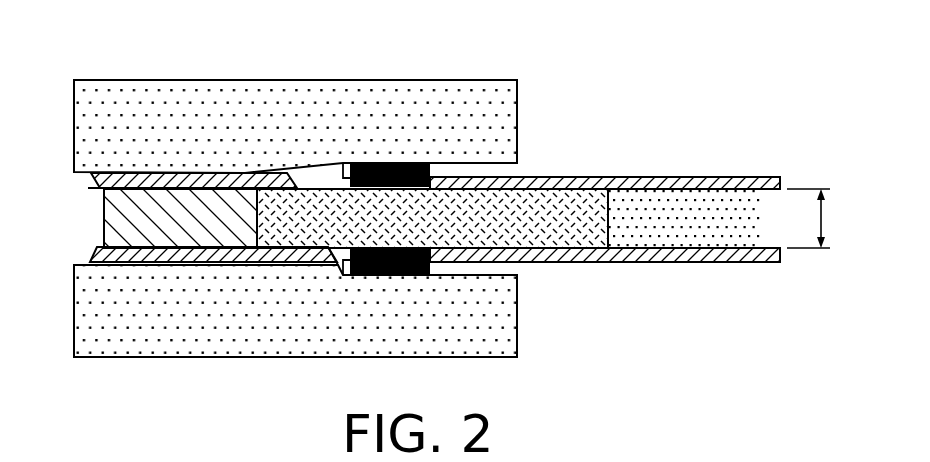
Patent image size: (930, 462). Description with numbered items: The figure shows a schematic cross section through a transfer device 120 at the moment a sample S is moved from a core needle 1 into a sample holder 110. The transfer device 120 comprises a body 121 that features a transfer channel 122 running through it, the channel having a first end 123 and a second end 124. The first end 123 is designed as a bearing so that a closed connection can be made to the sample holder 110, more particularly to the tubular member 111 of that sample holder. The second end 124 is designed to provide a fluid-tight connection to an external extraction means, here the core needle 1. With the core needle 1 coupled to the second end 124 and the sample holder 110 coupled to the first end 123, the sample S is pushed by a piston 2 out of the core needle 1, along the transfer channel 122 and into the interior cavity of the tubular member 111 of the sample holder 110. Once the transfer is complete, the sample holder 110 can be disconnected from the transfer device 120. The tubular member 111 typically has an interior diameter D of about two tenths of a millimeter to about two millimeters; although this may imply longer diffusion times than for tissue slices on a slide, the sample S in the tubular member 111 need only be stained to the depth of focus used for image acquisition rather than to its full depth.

The core needle 1 is at (91, 179).
The piston 2 is at (104, 220).
The sample holder 110 is at (700, 162).
The tubular member 111 is at (668, 262).
The transfer device 120 is at (500, 58).
The body 121 is at (204, 330).
The transfer channel 122 is at (322, 178).
The first end 123 is at (387, 164).
The second end 124 is at (89, 264).
The sample S is at (573, 202).
The interior diameter D is at (815, 218).